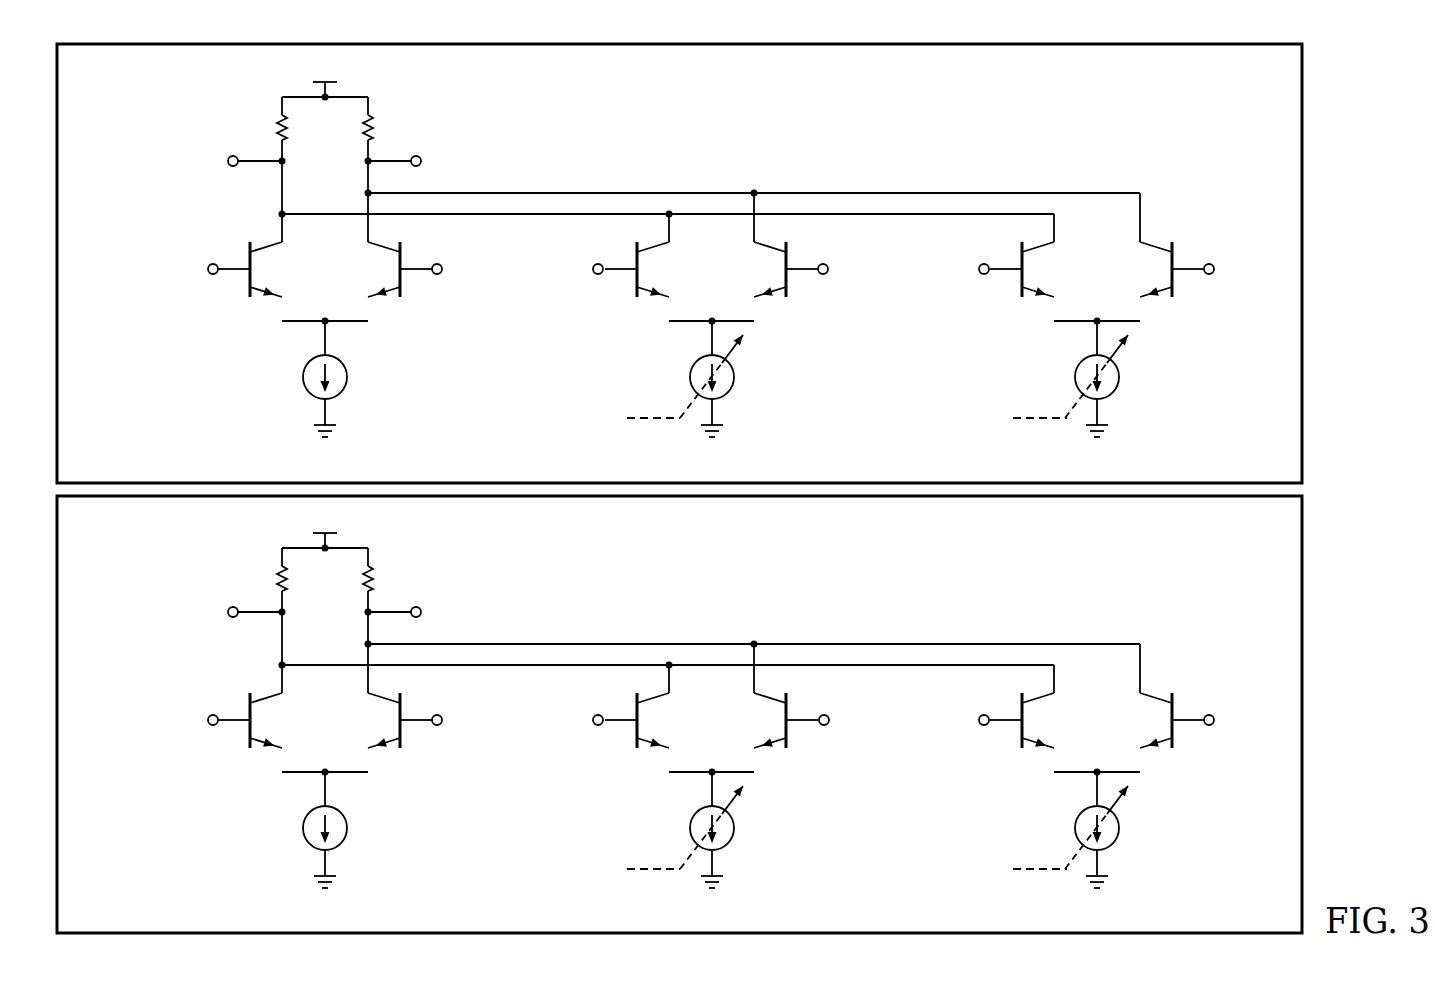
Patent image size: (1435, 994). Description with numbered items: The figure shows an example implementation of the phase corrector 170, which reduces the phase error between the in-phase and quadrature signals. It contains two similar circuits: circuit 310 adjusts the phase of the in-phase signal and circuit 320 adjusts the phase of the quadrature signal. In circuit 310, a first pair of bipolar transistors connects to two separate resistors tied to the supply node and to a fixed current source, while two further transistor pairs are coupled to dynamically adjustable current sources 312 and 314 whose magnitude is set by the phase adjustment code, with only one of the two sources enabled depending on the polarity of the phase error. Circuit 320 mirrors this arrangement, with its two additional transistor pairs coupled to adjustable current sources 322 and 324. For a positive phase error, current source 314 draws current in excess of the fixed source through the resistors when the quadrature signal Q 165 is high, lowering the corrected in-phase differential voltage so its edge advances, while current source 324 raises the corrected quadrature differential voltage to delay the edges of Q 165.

The phase corrector 170 is at (1349, 141).
The circuit 310 is at (720, 263).
The circuit 320 is at (720, 714).
The Q 165 is at (197, 744).
The dynamically adjustable current source 312 is at (735, 380).
The dynamically adjustable current source 314 is at (1119, 374).
The dynamically adjustable current source 322 is at (731, 830).
The dynamically adjustable current source 324 is at (1116, 830).